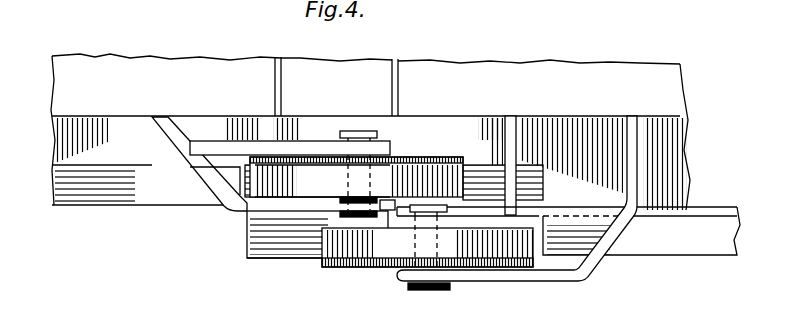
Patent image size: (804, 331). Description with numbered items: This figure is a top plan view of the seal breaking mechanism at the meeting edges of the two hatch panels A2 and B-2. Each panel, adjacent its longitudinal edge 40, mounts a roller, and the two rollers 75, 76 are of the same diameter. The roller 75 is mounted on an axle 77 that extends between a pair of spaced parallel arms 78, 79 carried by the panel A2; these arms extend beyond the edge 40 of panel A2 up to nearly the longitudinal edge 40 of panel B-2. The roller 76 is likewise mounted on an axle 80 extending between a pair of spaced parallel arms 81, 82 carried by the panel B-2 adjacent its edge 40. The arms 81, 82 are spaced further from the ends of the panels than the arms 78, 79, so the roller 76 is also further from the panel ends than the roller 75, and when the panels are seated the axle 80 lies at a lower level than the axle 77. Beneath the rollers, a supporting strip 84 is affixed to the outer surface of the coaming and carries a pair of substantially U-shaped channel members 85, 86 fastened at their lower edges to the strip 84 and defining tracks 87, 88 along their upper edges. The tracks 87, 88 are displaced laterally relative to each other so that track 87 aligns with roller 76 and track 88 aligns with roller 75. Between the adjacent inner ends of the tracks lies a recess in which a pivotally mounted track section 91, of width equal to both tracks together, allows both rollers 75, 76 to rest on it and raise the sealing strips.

The panel A2 is at (112, 77).
The panel B-2 is at (580, 70).
The longitudinal edge 40 is at (275, 88).
The roller 75 is at (420, 172).
The roller 76 is at (373, 243).
The axle 77 is at (359, 131).
The arm 78 is at (305, 141).
The arm 79 is at (283, 207).
The axle 80 is at (427, 290).
The arm 81 is at (582, 212).
The arm 82 is at (547, 282).
The supporting strip 84 is at (672, 152).
The channel member 85 is at (670, 255).
The channel member 86 is at (128, 206).
The track 87 is at (718, 240).
The track 88 is at (87, 190).
The track section 91 is at (261, 260).